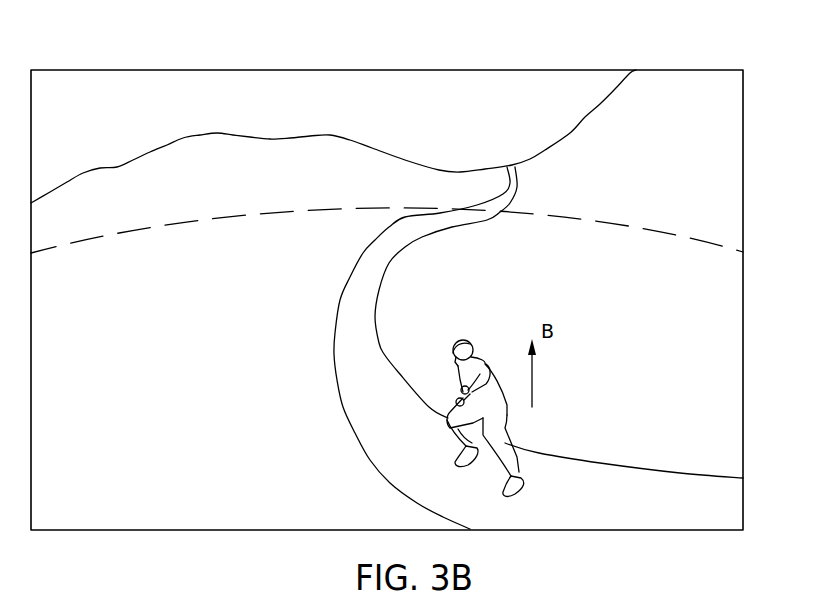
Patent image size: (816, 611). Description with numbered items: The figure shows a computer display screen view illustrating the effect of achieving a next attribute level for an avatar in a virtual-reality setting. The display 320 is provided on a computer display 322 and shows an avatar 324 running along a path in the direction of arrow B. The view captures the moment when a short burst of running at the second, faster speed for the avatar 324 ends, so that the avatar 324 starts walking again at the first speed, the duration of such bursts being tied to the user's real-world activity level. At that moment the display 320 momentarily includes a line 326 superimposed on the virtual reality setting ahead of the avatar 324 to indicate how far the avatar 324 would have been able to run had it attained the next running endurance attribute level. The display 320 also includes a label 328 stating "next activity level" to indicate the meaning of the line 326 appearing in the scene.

The display 320 is at (672, 54).
The computer display 322 is at (453, 70).
The avatar 324 is at (456, 340).
The line 326 is at (596, 222).
The next activity level label 328 is at (263, 180).